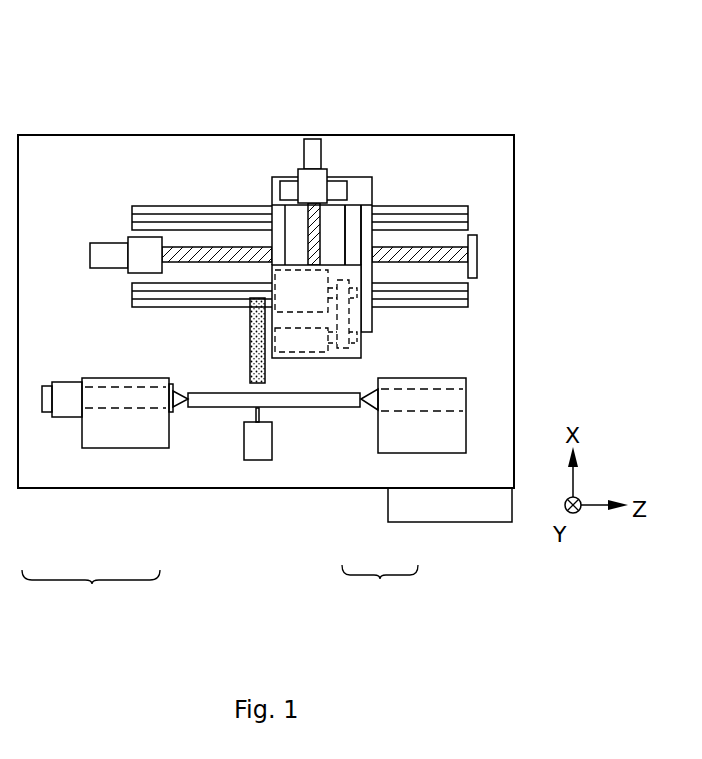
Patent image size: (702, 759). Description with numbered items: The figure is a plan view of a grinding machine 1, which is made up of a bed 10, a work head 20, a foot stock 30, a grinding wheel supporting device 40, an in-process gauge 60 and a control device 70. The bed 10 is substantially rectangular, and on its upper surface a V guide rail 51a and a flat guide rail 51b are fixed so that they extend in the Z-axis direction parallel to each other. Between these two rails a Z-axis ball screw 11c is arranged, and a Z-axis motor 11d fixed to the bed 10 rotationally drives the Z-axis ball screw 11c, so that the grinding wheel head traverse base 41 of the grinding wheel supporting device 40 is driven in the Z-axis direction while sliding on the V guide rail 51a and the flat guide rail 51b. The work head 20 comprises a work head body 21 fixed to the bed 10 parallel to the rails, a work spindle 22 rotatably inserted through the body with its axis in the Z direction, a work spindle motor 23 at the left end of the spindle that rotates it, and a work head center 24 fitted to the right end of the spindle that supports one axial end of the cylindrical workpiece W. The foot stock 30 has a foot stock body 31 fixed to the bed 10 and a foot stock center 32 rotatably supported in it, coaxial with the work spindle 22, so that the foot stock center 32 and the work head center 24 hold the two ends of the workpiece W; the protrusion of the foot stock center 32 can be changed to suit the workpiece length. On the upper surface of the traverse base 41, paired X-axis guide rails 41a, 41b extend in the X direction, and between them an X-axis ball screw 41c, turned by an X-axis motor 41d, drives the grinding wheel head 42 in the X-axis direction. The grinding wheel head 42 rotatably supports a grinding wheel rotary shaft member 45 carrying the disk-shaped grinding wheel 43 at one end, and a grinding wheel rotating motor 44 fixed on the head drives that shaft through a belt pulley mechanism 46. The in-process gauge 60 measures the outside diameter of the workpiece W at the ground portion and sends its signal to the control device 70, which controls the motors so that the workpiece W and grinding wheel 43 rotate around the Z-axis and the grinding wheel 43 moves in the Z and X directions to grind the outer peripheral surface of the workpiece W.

The grinding machine 1 is at (528, 80).
The bed 10 is at (474, 134).
The Z-axis ball screw for a grinding wheel head 11c is at (456, 249).
The Z-axis motor for a grinding wheel head 11d is at (100, 243).
The work head 20 is at (91, 591).
The work head body 21 is at (112, 410).
The work spindle 22 is at (98, 443).
The work spindle motor 23 is at (70, 410).
The work head center 24 is at (180, 410).
The foot stock 30 is at (380, 586).
The foot stock body 31 is at (418, 453).
The foot stock center 32 is at (377, 410).
The grinding wheel supporting device 40 is at (224, 167).
The grinding wheel head traverse base 41 is at (281, 211).
The X-axis guide rail for a grinding wheel head 41a is at (272, 176).
The X-axis guide rail for a grinding wheel head 41b is at (314, 222).
The X-axis ball screw for a grinding wheel head 41c is at (350, 214).
The X-axis motor for a grinding wheel head 41d is at (311, 138).
The grinding wheel head 42 is at (270, 272).
The grinding wheel 43 is at (247, 310).
The grinding wheel rotating motor 44 is at (317, 283).
The grinding wheel rotary shaft member 45 is at (324, 335).
The belt pulley mechanism 46 is at (345, 332).
The V guide rail for a grinding wheel head 51a is at (464, 297).
The flat guide rail for a grinding wheel head 51b is at (466, 214).
The in-process gauge 60 is at (255, 460).
The control device 70 is at (469, 523).
The workpiece W is at (332, 408).